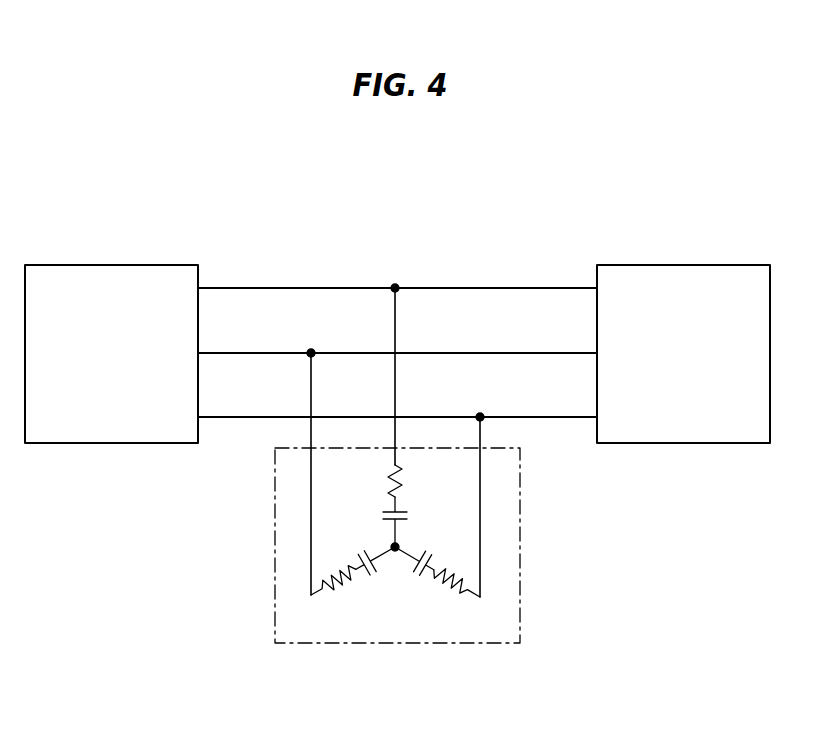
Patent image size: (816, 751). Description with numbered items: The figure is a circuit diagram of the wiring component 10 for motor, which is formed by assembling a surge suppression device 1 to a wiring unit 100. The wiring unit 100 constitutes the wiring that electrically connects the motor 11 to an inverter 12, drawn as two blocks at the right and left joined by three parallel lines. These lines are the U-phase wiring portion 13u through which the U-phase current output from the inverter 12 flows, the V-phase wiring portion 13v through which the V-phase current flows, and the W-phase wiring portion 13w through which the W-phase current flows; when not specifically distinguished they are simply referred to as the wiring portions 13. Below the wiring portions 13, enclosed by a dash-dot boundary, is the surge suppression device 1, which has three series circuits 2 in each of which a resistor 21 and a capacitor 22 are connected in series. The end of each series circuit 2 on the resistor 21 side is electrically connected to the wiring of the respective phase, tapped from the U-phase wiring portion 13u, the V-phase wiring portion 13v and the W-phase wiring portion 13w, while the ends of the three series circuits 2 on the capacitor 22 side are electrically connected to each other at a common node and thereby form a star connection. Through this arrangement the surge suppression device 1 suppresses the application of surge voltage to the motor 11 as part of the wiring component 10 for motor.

The wiring unit 100 is at (220, 223).
The wiring component for motor 10 is at (98, 657).
The surge suppression device 1 is at (537, 649).
The series circuit 2 is at (408, 505).
The resistor 21 is at (392, 485).
The capacitor 22 is at (385, 522).
The motor 11 is at (690, 264).
The inverter 12 is at (108, 264).
The wiring portions 13 is at (397, 300).
The U-phase wiring portion 13u is at (436, 286).
The V-phase wiring portion 13v is at (482, 351).
The W-phase wiring portion 13w is at (528, 415).